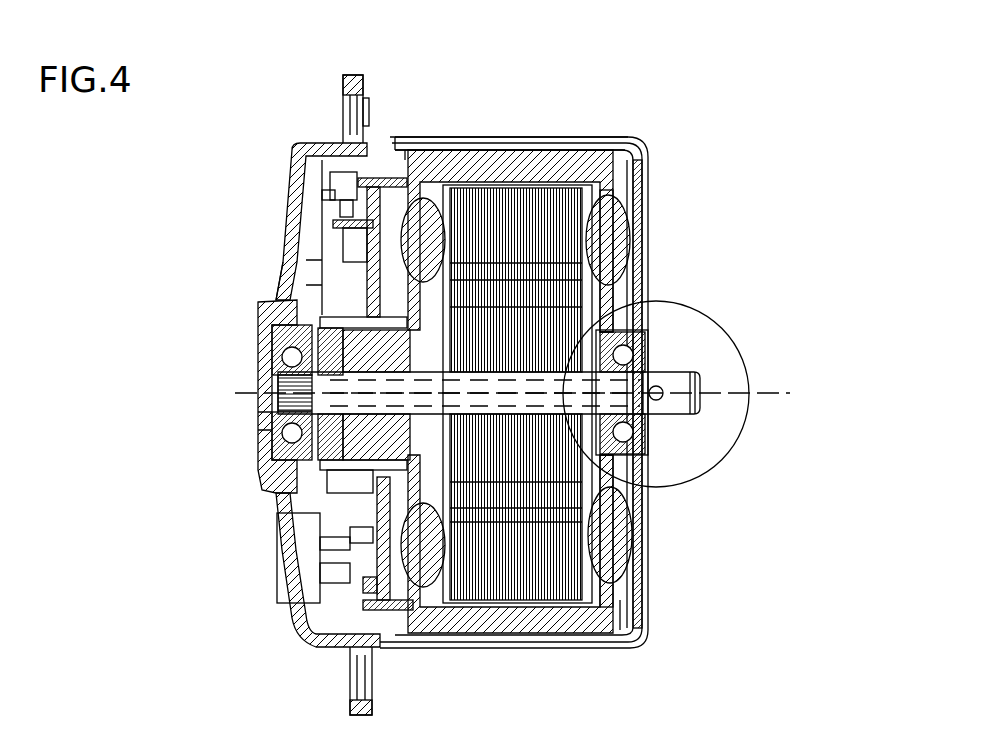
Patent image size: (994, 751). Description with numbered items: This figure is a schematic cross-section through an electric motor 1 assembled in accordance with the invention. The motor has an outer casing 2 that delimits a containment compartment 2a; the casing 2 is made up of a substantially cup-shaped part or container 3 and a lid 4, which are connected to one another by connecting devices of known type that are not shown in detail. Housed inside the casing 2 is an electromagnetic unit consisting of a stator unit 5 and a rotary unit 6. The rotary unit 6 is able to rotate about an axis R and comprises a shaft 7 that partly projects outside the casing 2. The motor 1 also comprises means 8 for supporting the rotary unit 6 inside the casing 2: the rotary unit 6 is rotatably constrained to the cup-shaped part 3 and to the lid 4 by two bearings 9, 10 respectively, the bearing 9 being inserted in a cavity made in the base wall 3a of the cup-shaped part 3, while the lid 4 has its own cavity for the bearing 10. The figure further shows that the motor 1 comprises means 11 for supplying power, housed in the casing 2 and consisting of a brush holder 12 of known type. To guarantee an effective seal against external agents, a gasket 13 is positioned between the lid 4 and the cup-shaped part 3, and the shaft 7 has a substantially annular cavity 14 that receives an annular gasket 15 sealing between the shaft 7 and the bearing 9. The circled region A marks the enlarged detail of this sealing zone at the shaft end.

The electric motor 1 is at (619, 101).
The outer casing 2 is at (503, 130).
The containment compartment 2a is at (326, 614).
The cup-shaped part 3 is at (651, 232).
The base wall 3a is at (658, 582).
The lid 4 is at (262, 462).
The stator unit 5 is at (594, 163).
The rotary unit 6 is at (545, 575).
The shaft 7 is at (675, 368).
The means for supporting the rotary unit 8 is at (260, 358).
The bearing 9 is at (644, 449).
The bearing 10 is at (262, 431).
The means for supplying power 11 is at (352, 212).
The brush holder 12 is at (330, 493).
The gasket 13 is at (368, 137).
The annular cavity 14 is at (609, 328).
The annular gasket 15 is at (670, 392).
The detail region A is at (738, 348).
The axis R is at (262, 328).